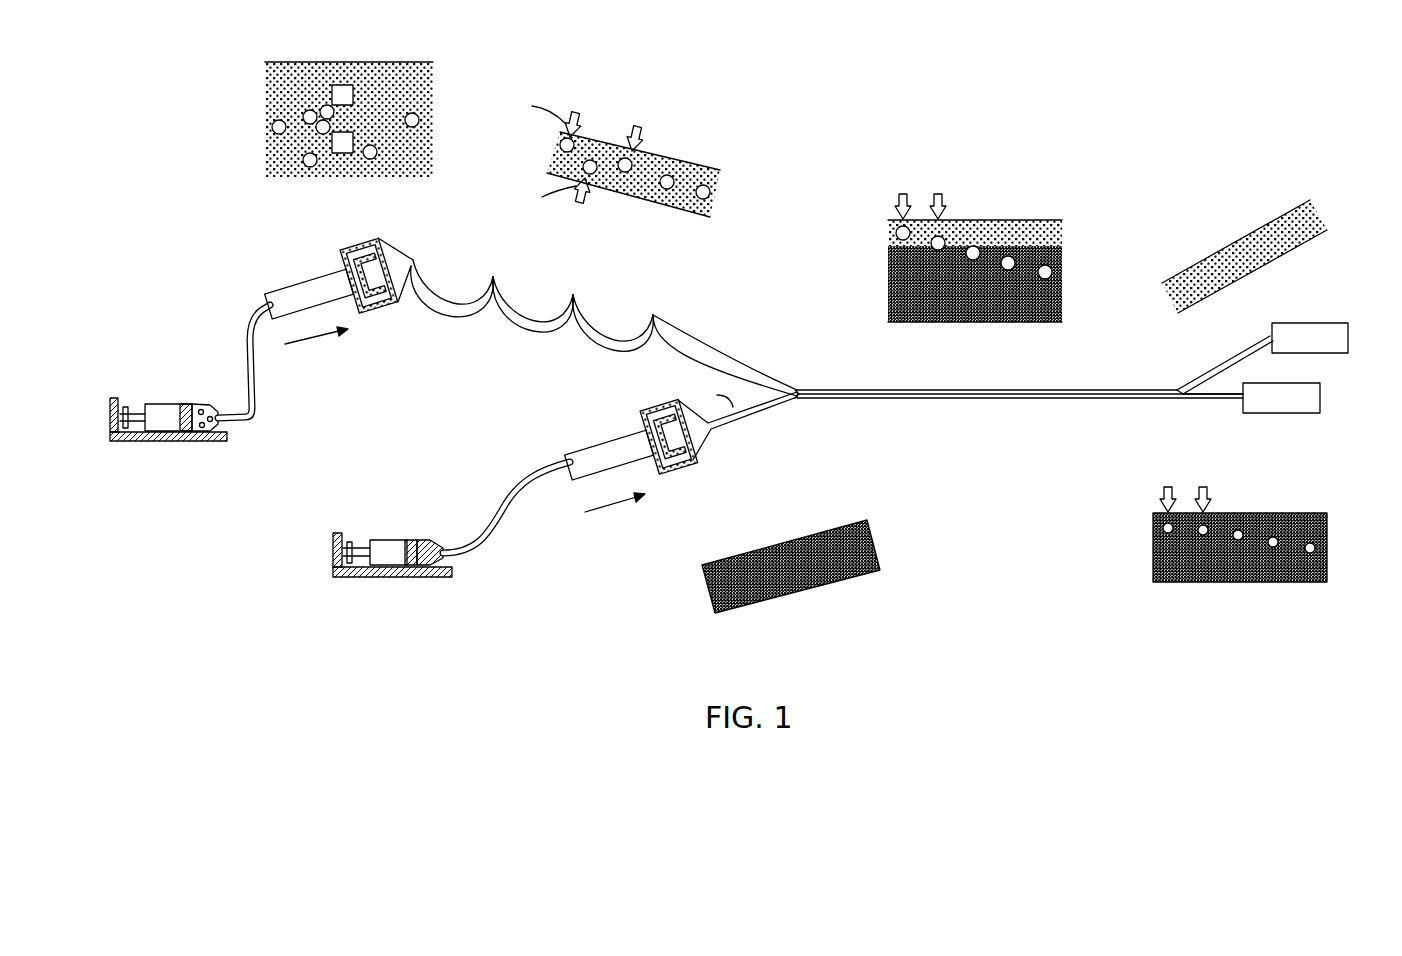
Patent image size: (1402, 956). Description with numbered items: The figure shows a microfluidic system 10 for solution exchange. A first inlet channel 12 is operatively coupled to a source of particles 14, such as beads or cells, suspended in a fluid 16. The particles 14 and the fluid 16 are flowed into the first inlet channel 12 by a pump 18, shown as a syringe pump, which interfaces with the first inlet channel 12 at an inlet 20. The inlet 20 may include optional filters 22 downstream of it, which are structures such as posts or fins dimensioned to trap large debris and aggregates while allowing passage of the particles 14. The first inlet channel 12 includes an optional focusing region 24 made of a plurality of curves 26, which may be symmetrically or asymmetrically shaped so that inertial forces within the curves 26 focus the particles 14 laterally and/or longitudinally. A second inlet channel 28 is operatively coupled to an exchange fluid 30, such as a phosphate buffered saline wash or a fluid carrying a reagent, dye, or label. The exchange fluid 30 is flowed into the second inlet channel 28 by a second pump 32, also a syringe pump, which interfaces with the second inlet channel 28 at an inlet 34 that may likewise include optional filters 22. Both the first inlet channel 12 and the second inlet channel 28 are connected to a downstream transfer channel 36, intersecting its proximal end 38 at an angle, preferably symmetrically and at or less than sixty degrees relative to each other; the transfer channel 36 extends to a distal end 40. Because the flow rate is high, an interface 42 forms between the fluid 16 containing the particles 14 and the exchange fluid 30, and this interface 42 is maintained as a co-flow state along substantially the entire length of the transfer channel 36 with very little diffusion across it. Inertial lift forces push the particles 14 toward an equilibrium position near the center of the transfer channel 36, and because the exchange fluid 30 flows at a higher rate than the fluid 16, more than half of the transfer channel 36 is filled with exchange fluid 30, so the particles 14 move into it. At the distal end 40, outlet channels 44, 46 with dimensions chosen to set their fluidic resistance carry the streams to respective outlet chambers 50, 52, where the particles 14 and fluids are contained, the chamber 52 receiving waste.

The microfluidic system 10 is at (778, 314).
The first inlet channel 12 is at (729, 372).
The particles 14 is at (303, 158).
The fluid 16 is at (408, 101).
The pump 18 is at (186, 450).
The inlet 20 is at (297, 283).
The filters 22 is at (333, 97).
The focusing region 24 is at (542, 309).
The curves 26 is at (503, 318).
The second inlet channel 28 is at (757, 414).
The exchange fluid 30 is at (1053, 308).
The pump 32 is at (410, 587).
The inlet 34 is at (597, 442).
The transfer channel 36 is at (1073, 400).
The proximal end 38 is at (800, 390).
The distal end 40 is at (1147, 390).
The interface 42 is at (1030, 245).
The outlet channel 44 is at (1205, 400).
The outlet channel 46 is at (1223, 362).
The outlet chamber 50 is at (1322, 398).
The outlet chamber 52 is at (1337, 330).